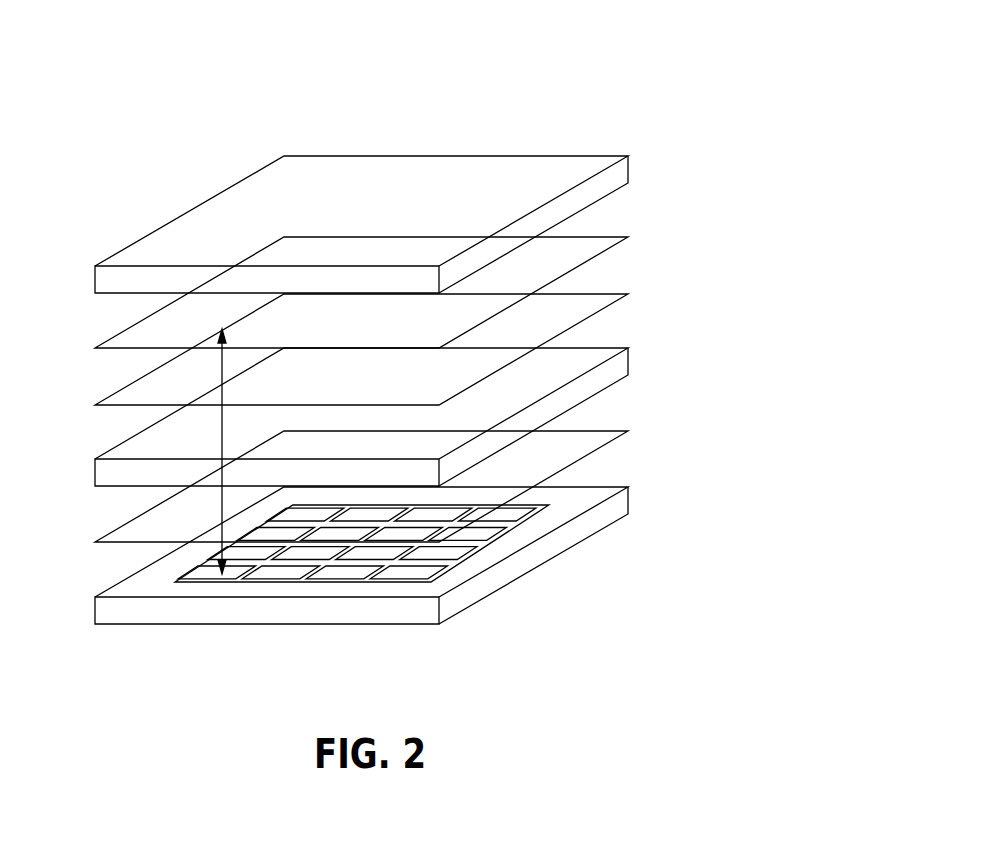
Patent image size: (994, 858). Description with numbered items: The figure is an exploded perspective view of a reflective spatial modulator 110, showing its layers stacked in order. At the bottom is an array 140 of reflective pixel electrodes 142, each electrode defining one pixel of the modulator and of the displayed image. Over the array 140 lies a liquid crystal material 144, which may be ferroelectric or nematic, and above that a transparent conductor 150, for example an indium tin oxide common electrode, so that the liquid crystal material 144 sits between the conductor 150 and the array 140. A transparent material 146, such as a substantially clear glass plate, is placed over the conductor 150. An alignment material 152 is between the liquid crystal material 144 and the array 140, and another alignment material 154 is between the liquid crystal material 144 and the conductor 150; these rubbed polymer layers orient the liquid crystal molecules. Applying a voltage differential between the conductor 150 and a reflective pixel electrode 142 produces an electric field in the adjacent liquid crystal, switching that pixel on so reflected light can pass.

The reflective spatial modulator 110 is at (518, 88).
The array 140 is at (227, 607).
The reflective pixel electrodes 142 is at (362, 568).
The liquid crystal material 144 is at (619, 366).
The transparent material 146 is at (619, 172).
The transparent conductor 150 is at (138, 313).
The alignment material 152 is at (595, 450).
The alignment material 154 is at (118, 390).